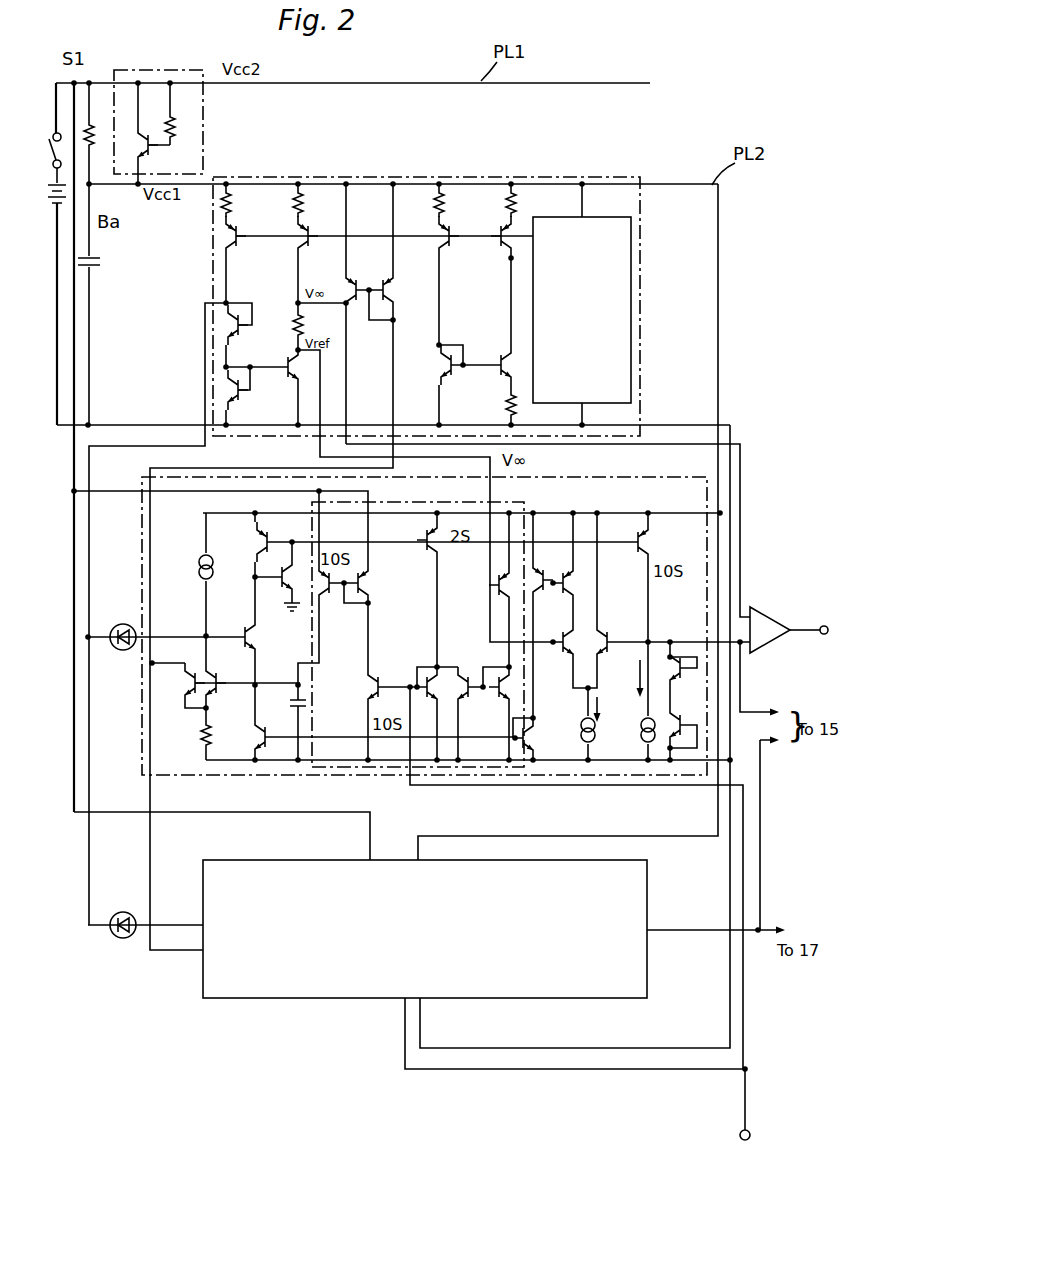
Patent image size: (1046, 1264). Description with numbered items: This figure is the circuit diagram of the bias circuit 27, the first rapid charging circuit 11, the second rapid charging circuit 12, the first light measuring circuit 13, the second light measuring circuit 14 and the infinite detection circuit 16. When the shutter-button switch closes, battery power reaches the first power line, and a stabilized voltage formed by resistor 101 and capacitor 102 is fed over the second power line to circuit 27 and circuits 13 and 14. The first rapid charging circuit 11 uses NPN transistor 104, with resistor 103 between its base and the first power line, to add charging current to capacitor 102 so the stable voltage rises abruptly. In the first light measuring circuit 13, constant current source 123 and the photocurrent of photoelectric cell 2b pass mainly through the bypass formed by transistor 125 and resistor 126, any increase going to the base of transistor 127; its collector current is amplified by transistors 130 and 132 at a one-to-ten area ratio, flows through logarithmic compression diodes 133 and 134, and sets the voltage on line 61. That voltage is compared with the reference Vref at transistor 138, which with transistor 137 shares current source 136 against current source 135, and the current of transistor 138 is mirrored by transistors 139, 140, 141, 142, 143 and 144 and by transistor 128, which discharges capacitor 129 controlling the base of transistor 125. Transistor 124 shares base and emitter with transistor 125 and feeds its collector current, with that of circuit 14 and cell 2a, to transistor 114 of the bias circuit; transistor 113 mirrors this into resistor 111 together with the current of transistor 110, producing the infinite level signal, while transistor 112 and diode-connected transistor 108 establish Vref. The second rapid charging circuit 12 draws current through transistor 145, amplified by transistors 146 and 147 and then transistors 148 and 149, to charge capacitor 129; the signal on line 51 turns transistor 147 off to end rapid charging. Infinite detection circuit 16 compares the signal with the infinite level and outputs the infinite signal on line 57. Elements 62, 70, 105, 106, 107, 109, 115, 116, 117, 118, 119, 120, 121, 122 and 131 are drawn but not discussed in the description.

The photoelectric cell 2a is at (123, 938).
The photoelectric cell 2b is at (123, 650).
The first rapid charging circuit 11 is at (162, 70).
The second rapid charging circuit 12 is at (525, 505).
The first light measuring circuit 13 is at (698, 496).
The second light measuring circuit 14 is at (585, 978).
The infinite detection circuit 16 is at (768, 608).
The bias circuit 27 is at (600, 178).
The line 51 is at (748, 1095).
The line 57 is at (812, 627).
The line 61 is at (742, 680).
The output line 62 is at (690, 925).
The supply line 70 is at (657, 448).
The resistor 101 is at (92, 128).
The capacitor 102 is at (100, 260).
The resistor 103 is at (176, 120).
The NPN transistor 104 is at (158, 150).
The resistor 105 is at (230, 205).
The transistor 106 is at (226, 252).
The transistor 107 is at (230, 302).
The transistor 108 is at (232, 363).
The resistor 109 is at (302, 205).
The transistor 110 is at (305, 233).
The resistor 111 is at (304, 325).
The transistor 112 is at (290, 378).
The transistor 113 is at (352, 282).
The transistor 114 is at (388, 282).
The resistor 115 is at (442, 205).
The transistor 116 is at (447, 248).
The transistor 117 is at (441, 343).
The resistor 118 is at (514, 205).
The transistor 119 is at (509, 260).
The transistor 120 is at (505, 362).
The resistor 121 is at (508, 402).
The various circuits 122 is at (622, 337).
The constant current source 123 is at (200, 572).
The transistor 124 is at (183, 702).
The transistor 125 is at (240, 672).
The resistor 126 is at (220, 768).
The transistor 127 is at (252, 644).
The transistor 128 is at (283, 768).
The capacitor 129 is at (303, 700).
The transistor 130 is at (262, 540).
The transistor 131 is at (292, 604).
The transistor 132 is at (642, 540).
The logarithmic compression diode 133 is at (693, 687).
The logarithmic compression diode 134 is at (690, 775).
The constant current source 135 is at (636, 775).
The constant current source 136 is at (600, 775).
The transistor 137 is at (612, 640).
The transistor 138 is at (566, 636).
The transistor 139 is at (578, 578).
The transistor 140 is at (540, 577).
The transistor 141 is at (488, 593).
The transistor 142 is at (531, 772).
The transistor 143 is at (508, 665).
The transistor 144 is at (460, 700).
The transistor 145 is at (433, 548).
The transistor 146 is at (430, 660).
The transistor 147 is at (380, 678).
The transistor 148 is at (366, 583).
The transistor 149 is at (327, 600).